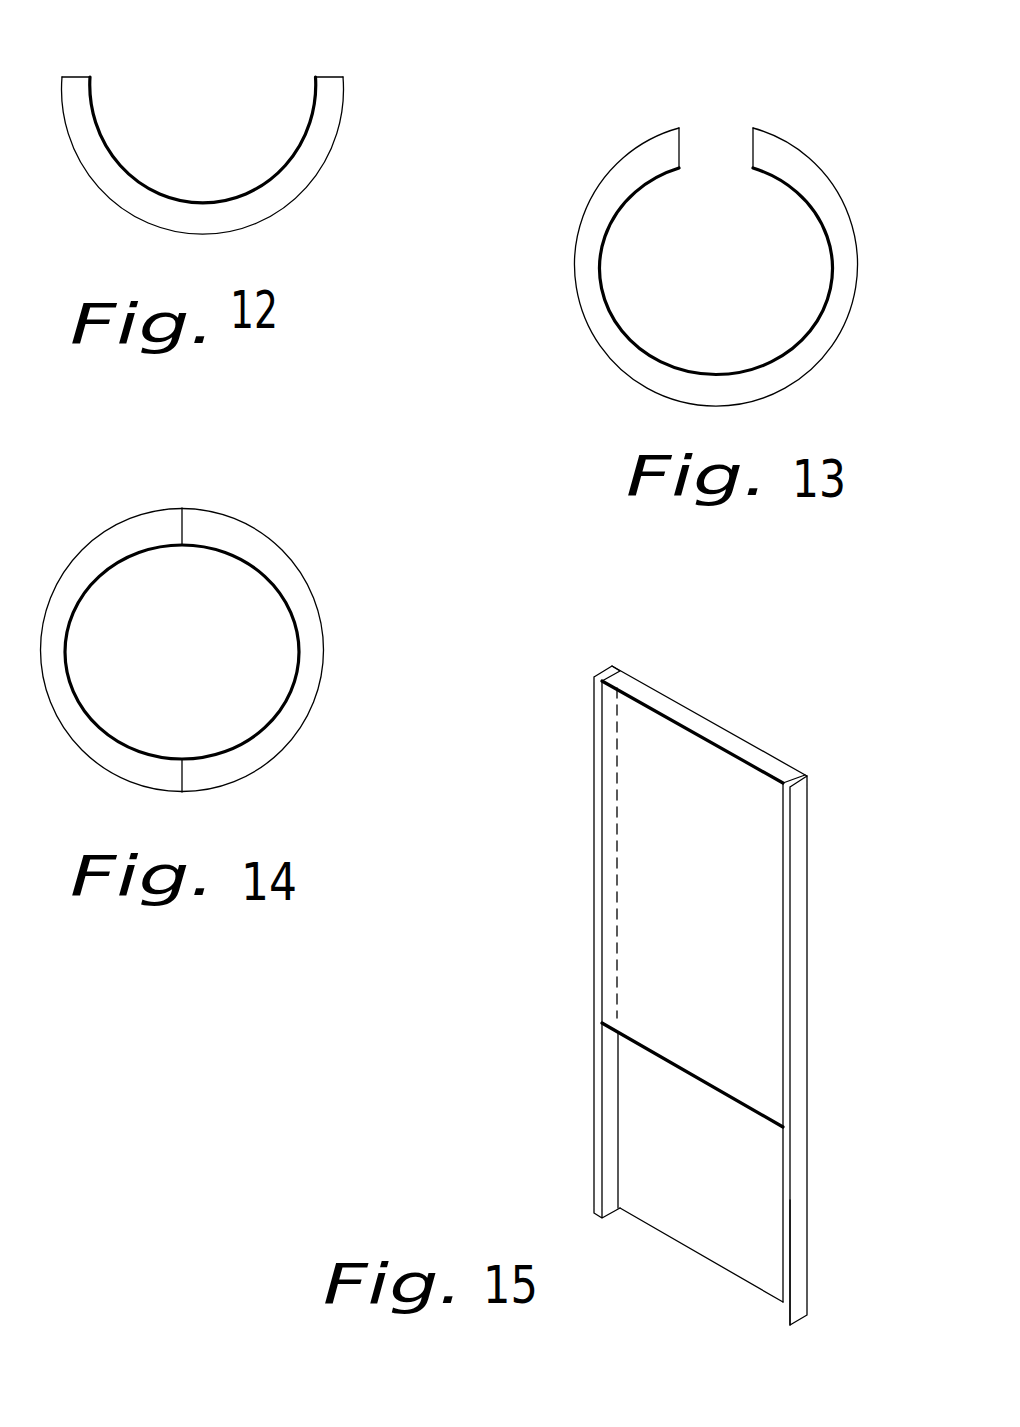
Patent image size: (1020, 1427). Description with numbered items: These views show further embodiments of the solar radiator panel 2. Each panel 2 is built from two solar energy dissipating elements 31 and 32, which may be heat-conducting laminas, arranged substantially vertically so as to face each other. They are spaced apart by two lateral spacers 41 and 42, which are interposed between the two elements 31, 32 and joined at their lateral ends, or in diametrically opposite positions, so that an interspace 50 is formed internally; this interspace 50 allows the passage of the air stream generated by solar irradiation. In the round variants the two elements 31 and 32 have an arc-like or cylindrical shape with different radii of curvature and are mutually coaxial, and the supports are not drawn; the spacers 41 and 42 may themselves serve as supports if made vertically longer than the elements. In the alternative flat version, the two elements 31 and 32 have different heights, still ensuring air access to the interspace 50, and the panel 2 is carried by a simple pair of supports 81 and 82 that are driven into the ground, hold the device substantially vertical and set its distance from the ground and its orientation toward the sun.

In FIG. 15, the panel 2 is at (648, 983).
In FIG. 12, the solar energy dissipating element 31 is at (285, 165).
In FIG. 13, the solar energy dissipating element 31 is at (732, 373).
In FIG. 14, the solar energy dissipating element 31 is at (265, 725).
In FIG. 15, the solar energy dissipating element 31 is at (617, 690).
In FIG. 12, the solar energy dissipating element 32 is at (315, 185).
In FIG. 13, the solar energy dissipating element 32 is at (845, 332).
In FIG. 14, the solar energy dissipating element 32 is at (316, 605).
In FIG. 15, the solar energy dissipating element 32 is at (642, 1177).
In FIG. 12, the lateral spacer 41 is at (68, 73).
In FIG. 13, the lateral spacer 41 is at (690, 140).
In FIG. 14, the lateral spacer 41 is at (185, 527).
In FIG. 15, the lateral spacer 41 is at (632, 674).
In FIG. 12, the lateral spacer 42 is at (328, 72).
In FIG. 13, the lateral spacer 42 is at (749, 138).
In FIG. 14, the lateral spacer 42 is at (185, 770).
In FIG. 15, the lateral spacer 42 is at (787, 774).
In FIG. 15, the interspace 50 is at (712, 730).
In FIG. 15, the support 81 is at (598, 1132).
In FIG. 15, the support 82 is at (800, 1213).